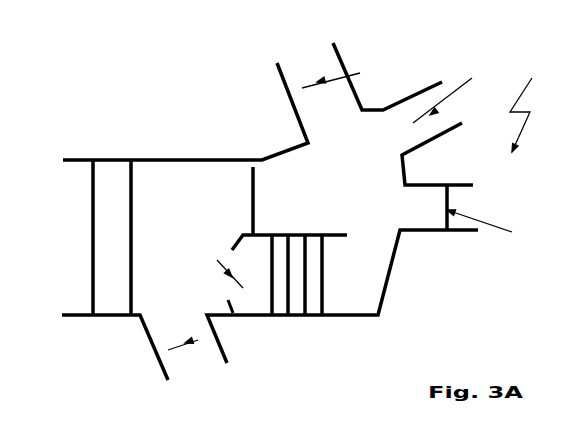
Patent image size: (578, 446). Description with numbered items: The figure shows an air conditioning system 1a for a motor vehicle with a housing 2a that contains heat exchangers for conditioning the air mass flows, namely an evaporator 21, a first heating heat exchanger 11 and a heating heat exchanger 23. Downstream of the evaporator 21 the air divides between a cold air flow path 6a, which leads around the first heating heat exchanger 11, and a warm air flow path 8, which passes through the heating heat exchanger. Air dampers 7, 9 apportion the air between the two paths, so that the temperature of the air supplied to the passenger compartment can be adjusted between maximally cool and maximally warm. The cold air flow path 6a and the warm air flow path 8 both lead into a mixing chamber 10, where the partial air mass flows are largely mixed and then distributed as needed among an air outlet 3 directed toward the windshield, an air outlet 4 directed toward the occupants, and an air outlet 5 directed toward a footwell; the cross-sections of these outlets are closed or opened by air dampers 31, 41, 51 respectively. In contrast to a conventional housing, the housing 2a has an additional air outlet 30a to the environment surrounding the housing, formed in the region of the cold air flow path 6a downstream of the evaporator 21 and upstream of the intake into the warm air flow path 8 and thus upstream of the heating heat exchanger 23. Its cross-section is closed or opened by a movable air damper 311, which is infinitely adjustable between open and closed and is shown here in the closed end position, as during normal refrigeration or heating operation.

The air conditioning system 1a is at (533, 103).
The housing 2a is at (163, 157).
The air outlet 3 is at (380, 79).
The air damper 31 is at (352, 76).
The air outlet 4 is at (434, 153).
The air damper 41 is at (456, 89).
The air outlet 5 is at (432, 207).
The air damper 51 is at (493, 230).
The cold air flow path 6a is at (254, 222).
The air damper 7 is at (255, 200).
The warm air flow path 8 is at (342, 296).
The air damper 9 is at (222, 272).
The mixing chamber 10 is at (362, 178).
The first heating heat exchanger 11 is at (282, 293).
The evaporator 21 is at (110, 287).
The heating heat exchanger 23 is at (312, 293).
The air outlet 30a is at (182, 332).
The air damper 311 is at (185, 343).